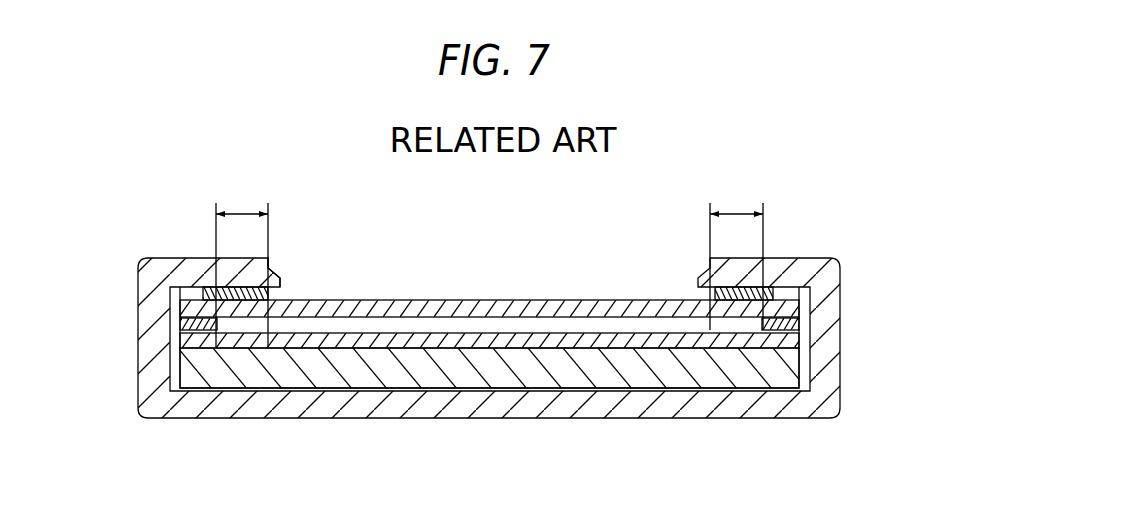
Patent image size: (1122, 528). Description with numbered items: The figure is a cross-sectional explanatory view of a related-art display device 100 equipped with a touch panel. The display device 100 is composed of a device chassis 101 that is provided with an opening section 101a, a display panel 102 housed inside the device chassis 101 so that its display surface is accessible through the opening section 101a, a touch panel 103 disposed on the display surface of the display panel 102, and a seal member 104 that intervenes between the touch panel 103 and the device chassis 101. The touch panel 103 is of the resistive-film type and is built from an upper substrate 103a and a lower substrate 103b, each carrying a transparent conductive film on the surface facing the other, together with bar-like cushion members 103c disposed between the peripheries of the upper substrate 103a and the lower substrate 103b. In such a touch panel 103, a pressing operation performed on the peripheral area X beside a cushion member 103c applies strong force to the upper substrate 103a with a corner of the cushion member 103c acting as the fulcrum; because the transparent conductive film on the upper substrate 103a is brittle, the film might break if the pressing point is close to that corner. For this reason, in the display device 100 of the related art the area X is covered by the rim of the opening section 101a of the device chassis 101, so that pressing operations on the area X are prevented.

The display device 100 is at (491, 315).
The device chassis 101 is at (489, 348).
The opening section 101a is at (285, 281).
The display panel 102 is at (460, 372).
The touch panel 103 is at (491, 277).
The upper substrate 103a is at (458, 308).
The lower substrate 103b is at (346, 340).
The cushion member 103c is at (190, 321).
The seal member 104 is at (230, 282).